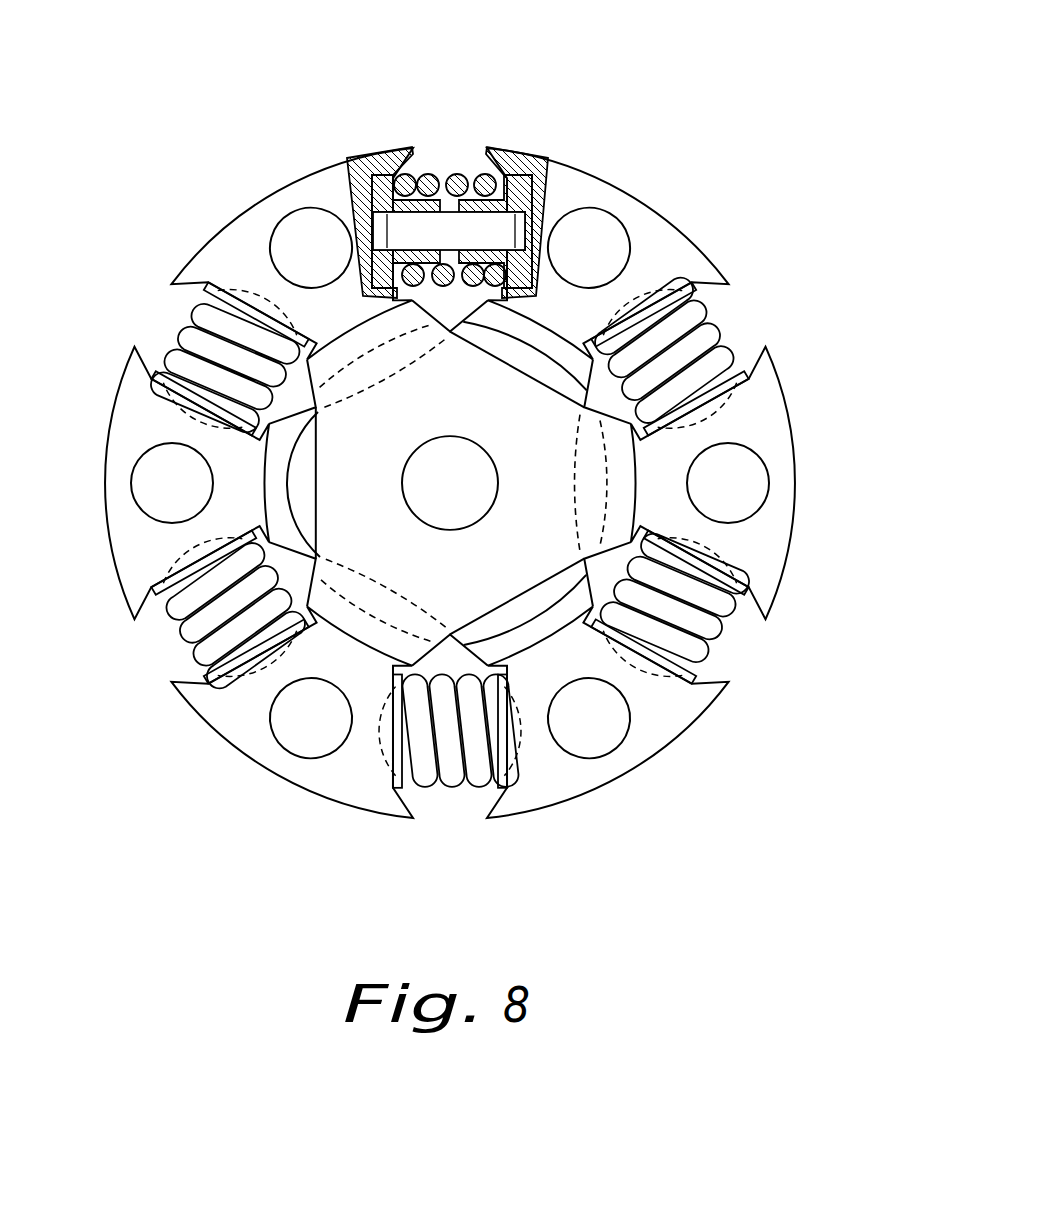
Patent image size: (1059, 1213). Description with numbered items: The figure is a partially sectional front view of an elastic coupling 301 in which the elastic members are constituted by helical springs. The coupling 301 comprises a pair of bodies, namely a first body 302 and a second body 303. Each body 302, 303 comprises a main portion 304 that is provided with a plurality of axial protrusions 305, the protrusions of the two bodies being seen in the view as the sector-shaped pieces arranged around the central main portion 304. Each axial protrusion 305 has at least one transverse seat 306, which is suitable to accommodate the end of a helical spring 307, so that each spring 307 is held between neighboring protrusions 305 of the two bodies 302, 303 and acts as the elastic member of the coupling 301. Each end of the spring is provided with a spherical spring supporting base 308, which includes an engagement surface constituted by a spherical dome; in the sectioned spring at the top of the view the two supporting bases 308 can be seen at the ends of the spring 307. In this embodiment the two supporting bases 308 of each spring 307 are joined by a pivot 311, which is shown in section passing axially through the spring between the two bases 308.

The coupling 301 is at (769, 137).
The first body 302 is at (265, 192).
The second body 303 is at (613, 178).
The main portion 304 is at (388, 567).
The axial protrusion 305 is at (460, 480).
The transverse seat 306 is at (422, 172).
The helical spring 307 is at (175, 340).
The spherical spring supporting base 308 is at (391, 171).
The pivot 311 is at (452, 228).